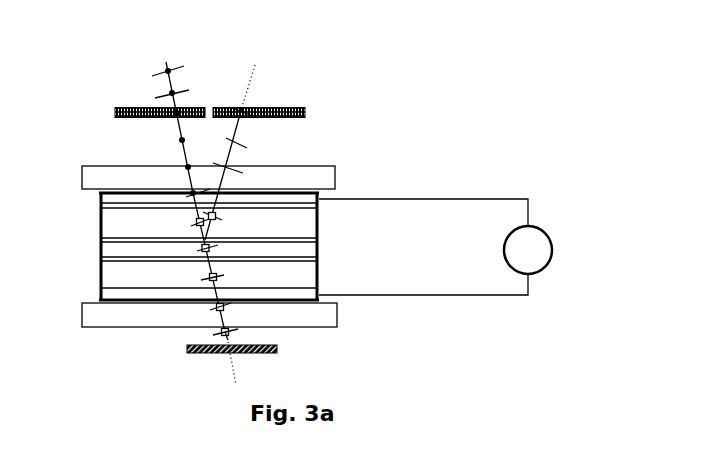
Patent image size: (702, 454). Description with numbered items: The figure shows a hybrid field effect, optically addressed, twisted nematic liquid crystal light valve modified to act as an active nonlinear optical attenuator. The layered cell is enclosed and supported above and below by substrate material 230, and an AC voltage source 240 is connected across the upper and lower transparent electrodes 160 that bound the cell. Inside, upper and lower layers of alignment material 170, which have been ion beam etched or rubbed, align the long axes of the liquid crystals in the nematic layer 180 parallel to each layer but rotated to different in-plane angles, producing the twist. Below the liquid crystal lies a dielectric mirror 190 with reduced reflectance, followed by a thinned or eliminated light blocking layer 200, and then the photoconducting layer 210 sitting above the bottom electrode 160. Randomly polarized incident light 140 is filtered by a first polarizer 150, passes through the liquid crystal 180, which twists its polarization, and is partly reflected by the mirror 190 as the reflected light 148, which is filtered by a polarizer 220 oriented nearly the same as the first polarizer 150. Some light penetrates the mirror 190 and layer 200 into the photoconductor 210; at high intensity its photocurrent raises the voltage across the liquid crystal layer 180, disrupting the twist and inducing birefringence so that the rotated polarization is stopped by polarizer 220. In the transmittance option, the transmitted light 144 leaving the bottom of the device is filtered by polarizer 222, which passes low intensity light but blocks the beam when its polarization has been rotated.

The incident light 140 is at (182, 195).
The transmitted light 144 is at (212, 336).
The reflected light 148 is at (240, 152).
The first polarizer 150 is at (157, 125).
The transparent electrodes 160 is at (106, 196).
The alignment material 170 is at (105, 209).
The nematic liquid crystal layer 180 is at (190, 223).
The dielectric mirror 190 is at (307, 245).
The light blocking layer 200 is at (307, 262).
The photoconducting layer 210 is at (190, 274).
The polarizer 220 is at (265, 106).
The polarizer 222 is at (283, 361).
The substrate material 230 is at (209, 246).
The AC voltage source 240 is at (445, 249).